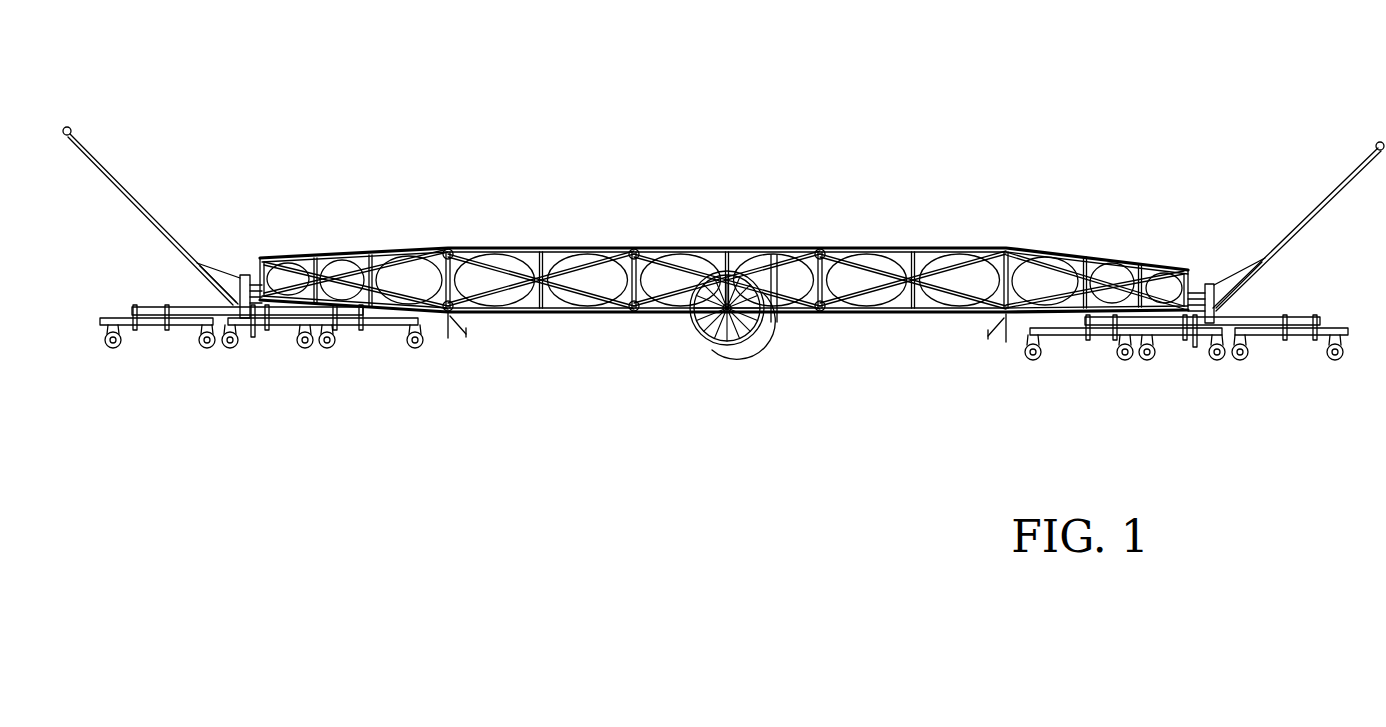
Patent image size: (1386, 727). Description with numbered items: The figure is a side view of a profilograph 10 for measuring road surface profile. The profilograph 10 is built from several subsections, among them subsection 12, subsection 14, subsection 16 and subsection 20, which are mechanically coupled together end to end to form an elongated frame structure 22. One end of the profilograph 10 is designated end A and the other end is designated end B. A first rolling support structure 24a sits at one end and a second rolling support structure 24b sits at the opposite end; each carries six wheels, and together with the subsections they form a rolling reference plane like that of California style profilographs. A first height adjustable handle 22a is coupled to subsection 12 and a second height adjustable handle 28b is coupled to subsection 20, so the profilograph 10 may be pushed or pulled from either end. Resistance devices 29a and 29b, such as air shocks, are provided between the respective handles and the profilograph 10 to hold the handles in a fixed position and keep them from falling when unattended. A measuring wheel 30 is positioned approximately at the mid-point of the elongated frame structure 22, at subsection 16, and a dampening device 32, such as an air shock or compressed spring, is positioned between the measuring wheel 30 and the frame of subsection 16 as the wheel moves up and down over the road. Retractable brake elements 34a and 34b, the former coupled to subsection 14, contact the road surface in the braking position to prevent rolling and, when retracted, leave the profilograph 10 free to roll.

The profilograph 10 is at (723, 337).
The subsection 12 is at (344, 252).
The subsection 14 is at (512, 248).
The subsection 16 is at (699, 248).
The subsection 20 is at (1092, 258).
The elongated frame structure 22 is at (724, 313).
The left boom 22a is at (117, 181).
The first rolling support structure 24a is at (261, 376).
The second rolling support structure 24b is at (1180, 385).
The second height adjustable handle 28b is at (1320, 211).
The resistance device 29a is at (208, 272).
The resistance device 29b is at (1222, 285).
The measuring wheel 30 is at (727, 347).
The dampening device 32 is at (760, 337).
The retractable brake element 34a is at (462, 336).
The retractable brake element 34b is at (985, 336).
The end A is at (204, 128).
The end B is at (1236, 130).